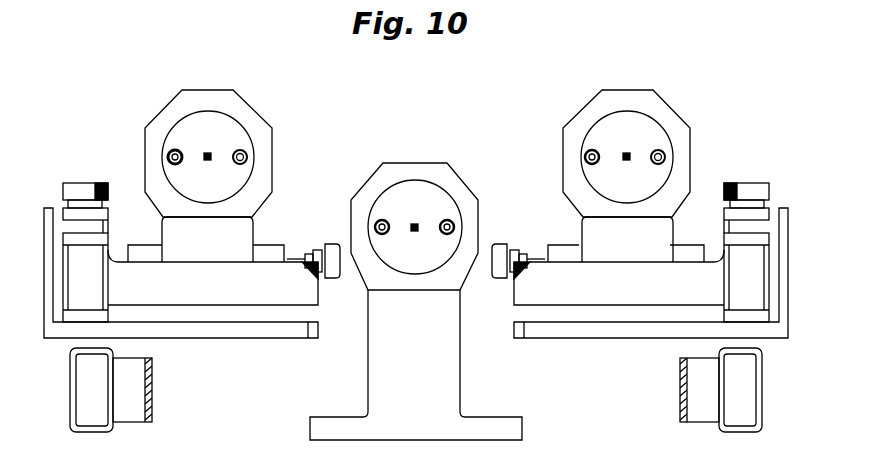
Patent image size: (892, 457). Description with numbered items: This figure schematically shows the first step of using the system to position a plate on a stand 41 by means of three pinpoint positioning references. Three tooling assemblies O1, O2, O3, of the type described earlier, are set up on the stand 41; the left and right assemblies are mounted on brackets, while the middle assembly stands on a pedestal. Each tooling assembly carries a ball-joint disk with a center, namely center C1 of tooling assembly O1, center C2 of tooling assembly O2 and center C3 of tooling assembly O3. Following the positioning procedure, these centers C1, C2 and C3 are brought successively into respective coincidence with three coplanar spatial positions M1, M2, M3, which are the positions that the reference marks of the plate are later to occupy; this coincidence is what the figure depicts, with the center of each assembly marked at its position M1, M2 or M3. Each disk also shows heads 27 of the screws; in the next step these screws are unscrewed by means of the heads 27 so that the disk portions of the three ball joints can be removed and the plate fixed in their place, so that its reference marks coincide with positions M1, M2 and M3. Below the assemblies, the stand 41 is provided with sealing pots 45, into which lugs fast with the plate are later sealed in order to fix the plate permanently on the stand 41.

The tooling assembly O1 is at (131, 137).
The tooling assembly O2 is at (440, 134).
The tooling assembly O3 is at (716, 133).
The spatial position M1 is at (205, 153).
The spatial position M2 is at (409, 224).
The spatial position M3 is at (620, 152).
The center C1 is at (215, 149).
The center C2 is at (422, 213).
The center C3 is at (636, 148).
The head 27 is at (248, 157).
The stand 41 is at (70, 398).
The sealing pot 45 is at (135, 390).